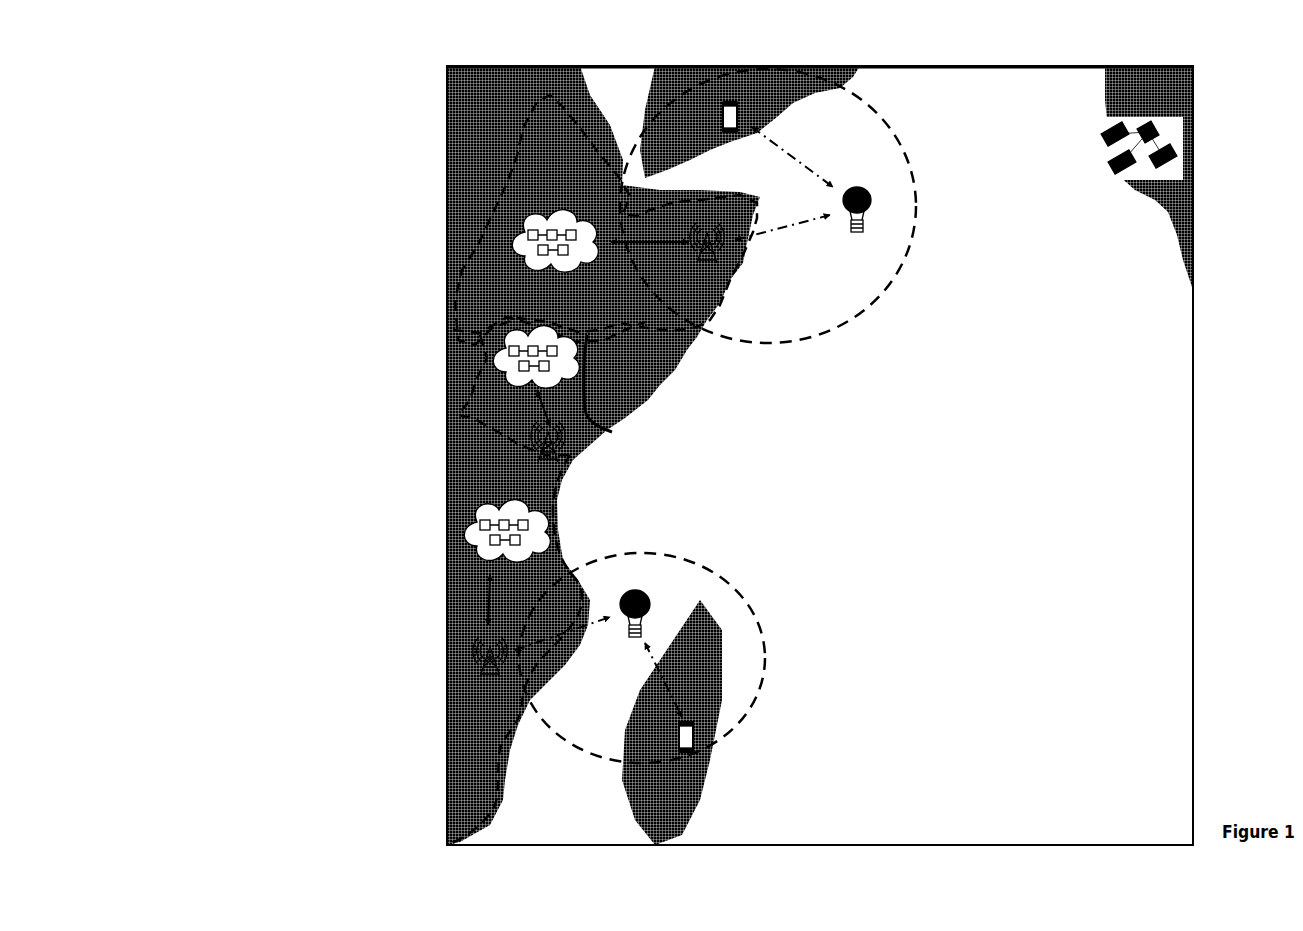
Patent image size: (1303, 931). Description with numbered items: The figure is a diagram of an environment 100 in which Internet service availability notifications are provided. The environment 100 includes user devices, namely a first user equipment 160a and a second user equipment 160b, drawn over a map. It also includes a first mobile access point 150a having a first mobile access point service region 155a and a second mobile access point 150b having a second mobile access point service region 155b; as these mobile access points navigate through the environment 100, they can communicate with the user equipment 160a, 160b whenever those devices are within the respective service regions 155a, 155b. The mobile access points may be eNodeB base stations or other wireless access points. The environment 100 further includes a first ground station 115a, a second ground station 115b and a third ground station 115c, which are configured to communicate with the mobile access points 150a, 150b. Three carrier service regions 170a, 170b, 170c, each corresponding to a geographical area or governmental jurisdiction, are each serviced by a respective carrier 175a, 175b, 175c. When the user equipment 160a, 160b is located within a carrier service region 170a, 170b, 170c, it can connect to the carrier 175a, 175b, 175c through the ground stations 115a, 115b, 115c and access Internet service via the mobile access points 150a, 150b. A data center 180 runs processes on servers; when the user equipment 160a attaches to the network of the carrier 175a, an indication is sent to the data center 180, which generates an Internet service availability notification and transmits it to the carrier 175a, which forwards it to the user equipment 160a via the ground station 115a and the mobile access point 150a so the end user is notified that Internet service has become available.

The environment 100 is at (1221, 105).
The first ground station 115a is at (465, 665).
The second ground station 115b is at (722, 246).
The third ground station 115c is at (567, 434).
The first mobile access point 150a is at (636, 588).
The second mobile access point 150b is at (883, 212).
The first mobile access point service region 155a is at (762, 618).
The second mobile access point service region 155b is at (884, 298).
The first user equipment 160a is at (702, 748).
The second user equipment 160b is at (728, 102).
The first carrier service region 170a is at (470, 485).
The second carrier service region 170b is at (508, 183).
The third carrier service region 170c is at (470, 330).
The first carrier 175a is at (465, 522).
The second carrier 175b is at (515, 240).
The third carrier 175c is at (492, 370).
The data center 180 is at (1092, 148).